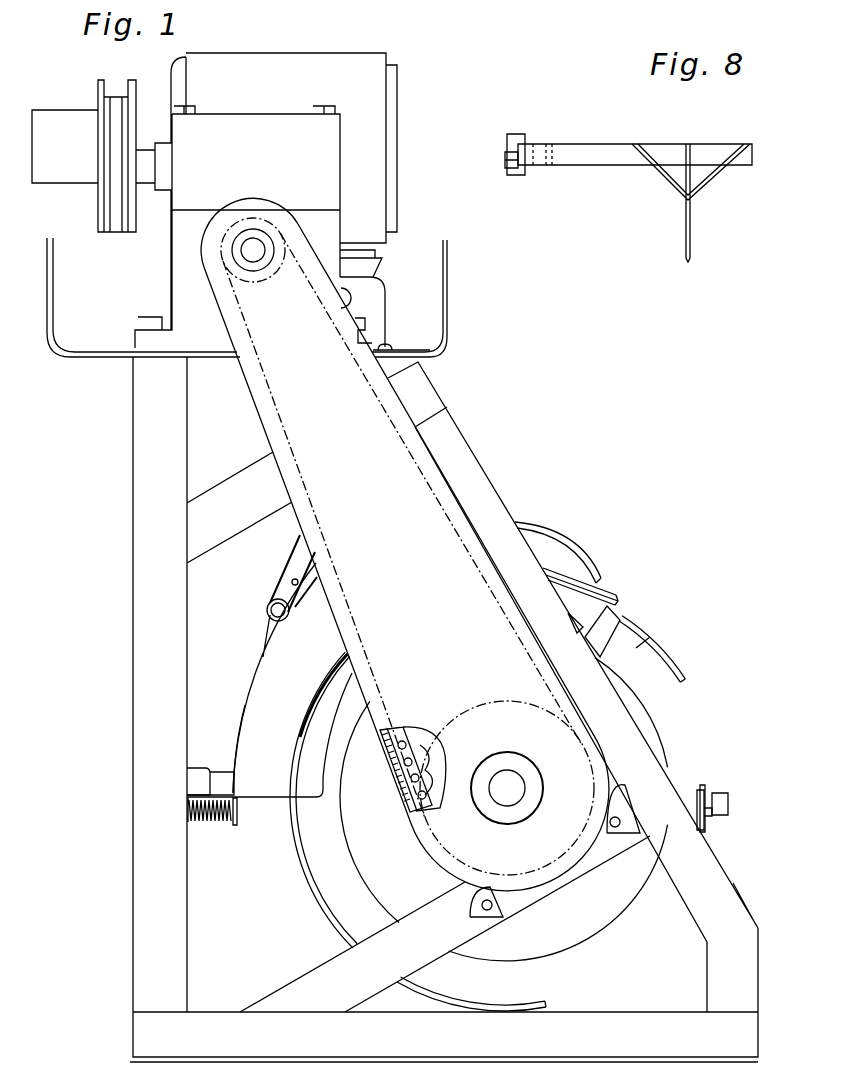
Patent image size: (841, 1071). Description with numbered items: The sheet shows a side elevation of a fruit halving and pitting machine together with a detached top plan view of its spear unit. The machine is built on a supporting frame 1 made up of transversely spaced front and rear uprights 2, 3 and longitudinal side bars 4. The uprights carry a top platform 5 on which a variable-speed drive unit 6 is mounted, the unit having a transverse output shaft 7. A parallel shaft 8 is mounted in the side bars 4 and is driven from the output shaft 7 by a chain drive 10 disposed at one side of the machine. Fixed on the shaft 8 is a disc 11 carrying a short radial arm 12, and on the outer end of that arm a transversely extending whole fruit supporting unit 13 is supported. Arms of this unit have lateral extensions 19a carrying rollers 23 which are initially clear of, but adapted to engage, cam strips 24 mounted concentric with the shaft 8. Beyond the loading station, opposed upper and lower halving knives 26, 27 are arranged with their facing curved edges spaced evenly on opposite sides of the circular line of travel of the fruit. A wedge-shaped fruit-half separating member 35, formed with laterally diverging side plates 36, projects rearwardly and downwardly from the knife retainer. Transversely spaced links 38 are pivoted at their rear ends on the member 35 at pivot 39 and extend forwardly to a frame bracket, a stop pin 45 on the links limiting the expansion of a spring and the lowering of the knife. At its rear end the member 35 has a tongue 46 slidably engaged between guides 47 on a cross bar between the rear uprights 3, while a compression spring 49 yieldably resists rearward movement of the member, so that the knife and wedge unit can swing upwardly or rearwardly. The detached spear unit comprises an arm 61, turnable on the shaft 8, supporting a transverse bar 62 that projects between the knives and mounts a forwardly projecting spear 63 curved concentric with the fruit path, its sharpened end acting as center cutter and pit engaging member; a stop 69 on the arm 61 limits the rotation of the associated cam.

In FIG. 1, the supporting frame 1 is at (125, 528).
In FIG. 1, the front upright 2 is at (498, 502).
In FIG. 1, the rear upright 3 is at (141, 452).
In FIG. 1, the longitudinal side bar 4 is at (332, 966).
In FIG. 1, the top platform 5 is at (94, 358).
In FIG. 1, the variable-speed drive unit 6 is at (160, 260).
In FIG. 1, the output shaft 7 is at (255, 262).
In FIG. 1, the shaft 8 is at (500, 797).
In FIG. 1, the chain drive 10 is at (430, 733).
In FIG. 1, the disc 11 is at (581, 933).
In FIG. 1, the radial arm 12 is at (658, 866).
In FIG. 1, the fruit supporting unit 13 is at (727, 833).
In FIG. 1, the extension 19a is at (706, 795).
In FIG. 1, the roller 23 is at (729, 804).
In FIG. 1, the cam strip 24 is at (617, 598).
In FIG. 1, the upper halving knife 26 is at (545, 541).
In FIG. 1, the lower halving knife 27 is at (572, 618).
In FIG. 1, the fruit-half separating member 35 is at (240, 724).
In FIG. 1, the side plate 36 is at (280, 677).
In FIG. 1, the link 38 is at (302, 546).
In FIG. 1, the pivot 39 is at (268, 612).
In FIG. 1, the stop pin 45 is at (291, 582).
In FIG. 1, the tongue 46 is at (222, 781).
In FIG. 1, the guide 47 is at (193, 778).
In FIG. 1, the compression spring 49 is at (205, 825).
In FIG. 8, the arm 61 is at (515, 147).
In FIG. 8, the transverse bar 62 is at (606, 162).
In FIG. 8, the spear 63 is at (694, 216).
In FIG. 8, the stop 69 is at (510, 166).